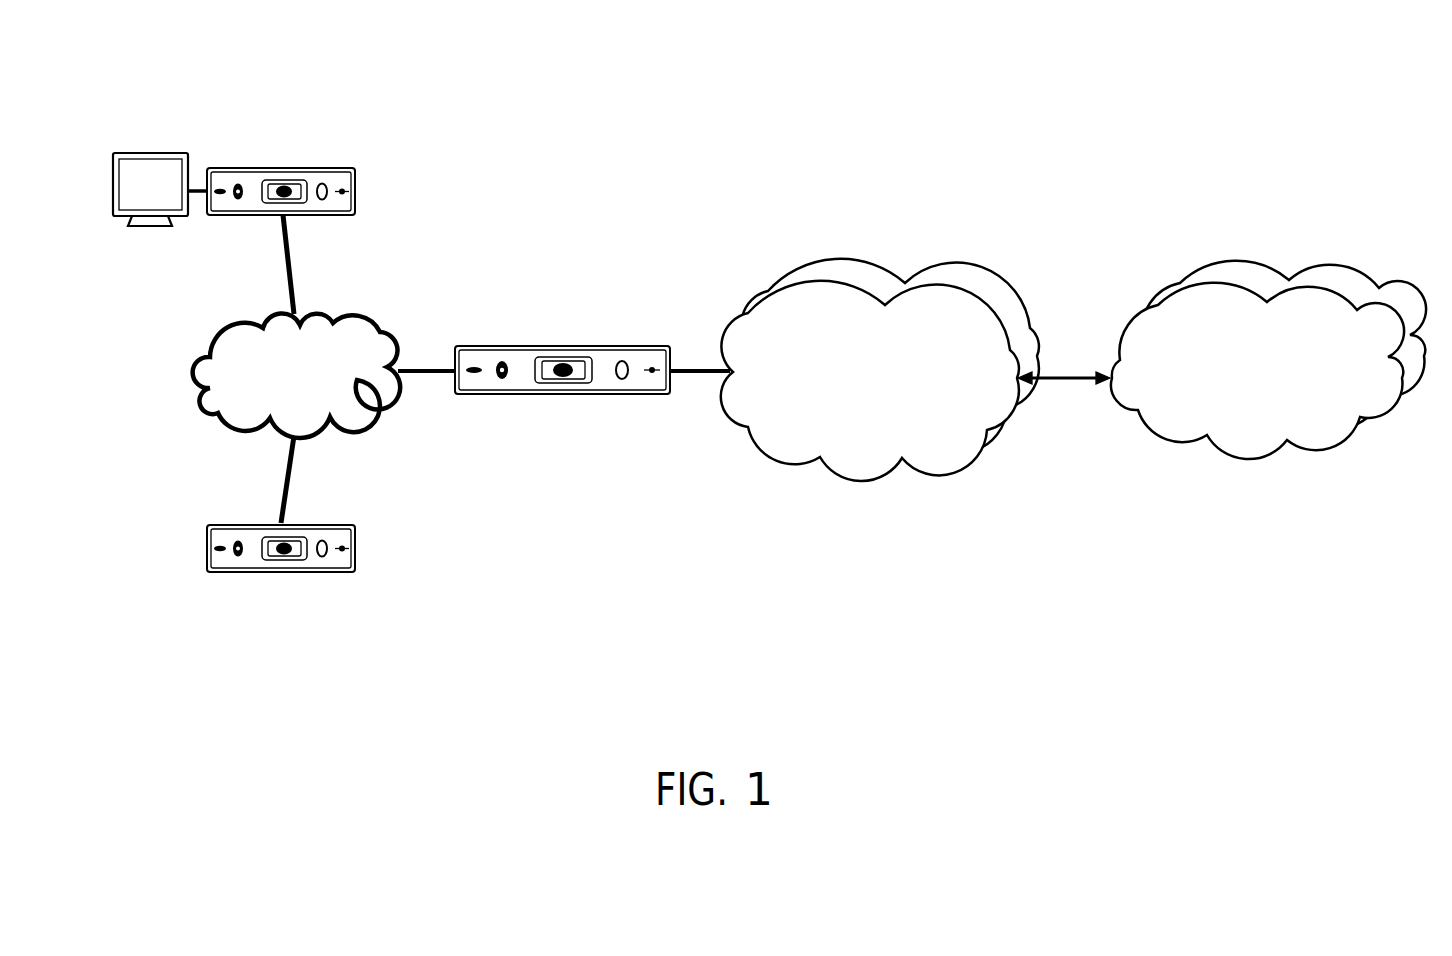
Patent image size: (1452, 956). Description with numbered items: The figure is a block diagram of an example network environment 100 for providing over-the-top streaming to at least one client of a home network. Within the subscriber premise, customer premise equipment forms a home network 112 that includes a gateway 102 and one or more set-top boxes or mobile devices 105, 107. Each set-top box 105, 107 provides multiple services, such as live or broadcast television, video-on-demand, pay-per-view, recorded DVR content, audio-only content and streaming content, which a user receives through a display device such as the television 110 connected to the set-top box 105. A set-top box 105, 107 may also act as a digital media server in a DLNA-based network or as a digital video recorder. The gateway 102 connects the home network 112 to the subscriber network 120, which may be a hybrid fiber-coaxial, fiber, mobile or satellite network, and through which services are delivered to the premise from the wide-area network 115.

The network environment 100 is at (1110, 182).
The gateway 102 is at (563, 397).
The set-top box 105 is at (280, 162).
The set-top box 107 is at (280, 577).
The television 110 is at (150, 150).
The home network 112 is at (192, 375).
The wide-area network 115 is at (1240, 462).
The subscriber network 120 is at (805, 462).